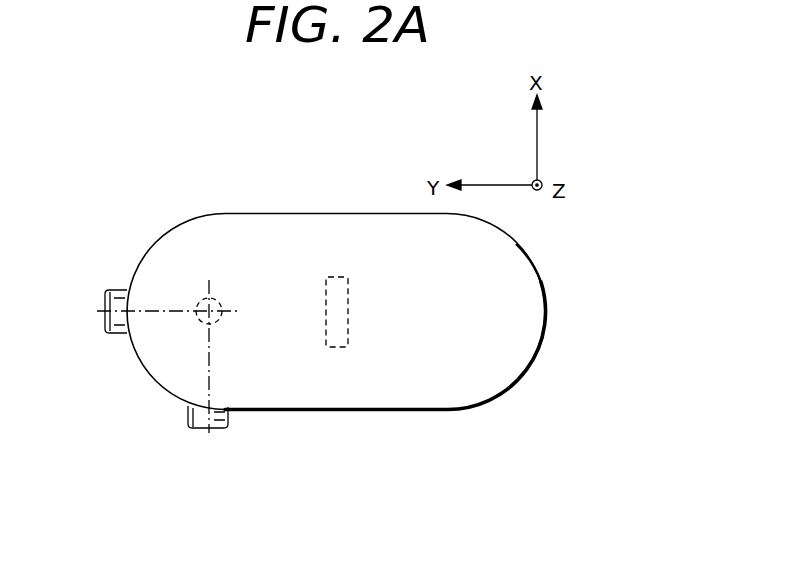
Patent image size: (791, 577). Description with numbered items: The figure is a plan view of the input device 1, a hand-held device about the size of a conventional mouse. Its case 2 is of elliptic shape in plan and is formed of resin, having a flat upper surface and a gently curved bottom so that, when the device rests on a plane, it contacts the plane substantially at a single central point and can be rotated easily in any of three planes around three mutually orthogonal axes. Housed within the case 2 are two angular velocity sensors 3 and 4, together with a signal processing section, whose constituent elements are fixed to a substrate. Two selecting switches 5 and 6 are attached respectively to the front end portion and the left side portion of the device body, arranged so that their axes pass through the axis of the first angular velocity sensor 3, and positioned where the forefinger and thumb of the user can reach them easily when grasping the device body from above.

The input device 1 is at (353, 203).
The case 2 is at (528, 317).
The angular velocity sensor 3 is at (218, 301).
The angular velocity sensor 4 is at (349, 312).
The selecting switch 5 is at (117, 300).
The selecting switch 6 is at (228, 420).